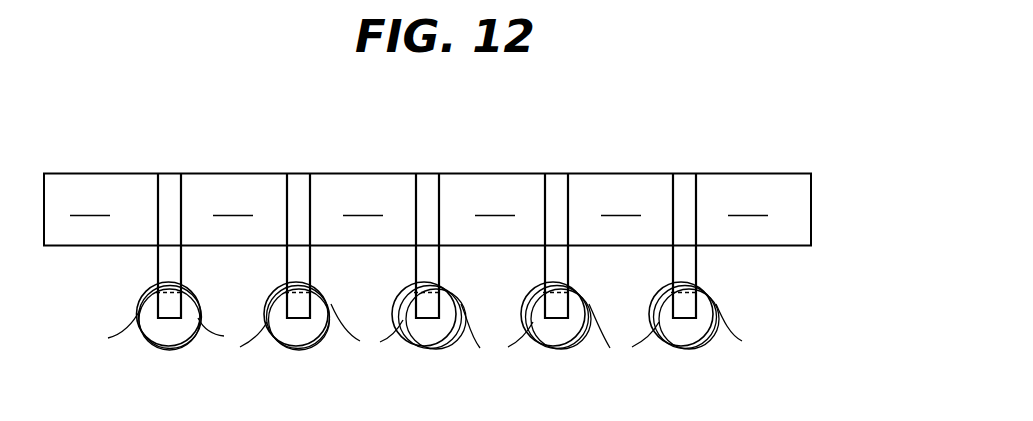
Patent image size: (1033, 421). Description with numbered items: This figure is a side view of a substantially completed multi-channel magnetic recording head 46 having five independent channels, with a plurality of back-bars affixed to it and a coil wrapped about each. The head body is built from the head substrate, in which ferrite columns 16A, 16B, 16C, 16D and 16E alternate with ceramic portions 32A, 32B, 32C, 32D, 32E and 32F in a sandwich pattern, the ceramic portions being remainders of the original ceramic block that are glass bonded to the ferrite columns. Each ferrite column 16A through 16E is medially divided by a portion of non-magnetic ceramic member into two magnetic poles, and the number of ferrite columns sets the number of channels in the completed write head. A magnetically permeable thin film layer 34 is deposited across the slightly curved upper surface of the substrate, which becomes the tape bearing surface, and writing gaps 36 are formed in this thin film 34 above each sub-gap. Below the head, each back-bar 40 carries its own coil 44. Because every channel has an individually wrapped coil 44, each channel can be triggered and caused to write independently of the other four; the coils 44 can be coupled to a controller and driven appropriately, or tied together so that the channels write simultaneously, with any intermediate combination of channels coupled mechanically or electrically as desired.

The ferrite column 16A is at (181, 219).
The ferrite column 16B is at (301, 182).
The ferrite column 16C is at (430, 182).
The ferrite column 16D is at (559, 182).
The ferrite column 16E is at (687, 182).
The ceramic portion 32A is at (90, 205).
The ceramic portion 32B is at (233, 205).
The ceramic portion 32C is at (363, 205).
The ceramic portion 32D is at (495, 205).
The ceramic portion 32E is at (621, 205).
The ceramic portion 32F is at (748, 205).
The magnetically permeable thin film layer 34 is at (243, 173).
The writing gap 36 is at (173, 183).
The back-bar 40 is at (168, 262).
The coil 44 is at (138, 301).
The head 46 is at (846, 205).